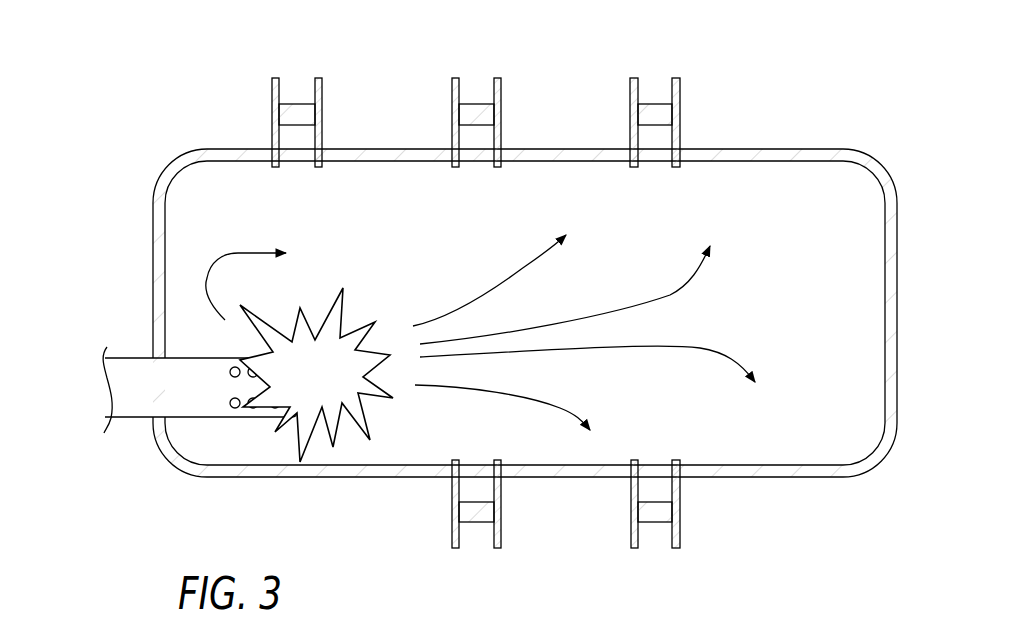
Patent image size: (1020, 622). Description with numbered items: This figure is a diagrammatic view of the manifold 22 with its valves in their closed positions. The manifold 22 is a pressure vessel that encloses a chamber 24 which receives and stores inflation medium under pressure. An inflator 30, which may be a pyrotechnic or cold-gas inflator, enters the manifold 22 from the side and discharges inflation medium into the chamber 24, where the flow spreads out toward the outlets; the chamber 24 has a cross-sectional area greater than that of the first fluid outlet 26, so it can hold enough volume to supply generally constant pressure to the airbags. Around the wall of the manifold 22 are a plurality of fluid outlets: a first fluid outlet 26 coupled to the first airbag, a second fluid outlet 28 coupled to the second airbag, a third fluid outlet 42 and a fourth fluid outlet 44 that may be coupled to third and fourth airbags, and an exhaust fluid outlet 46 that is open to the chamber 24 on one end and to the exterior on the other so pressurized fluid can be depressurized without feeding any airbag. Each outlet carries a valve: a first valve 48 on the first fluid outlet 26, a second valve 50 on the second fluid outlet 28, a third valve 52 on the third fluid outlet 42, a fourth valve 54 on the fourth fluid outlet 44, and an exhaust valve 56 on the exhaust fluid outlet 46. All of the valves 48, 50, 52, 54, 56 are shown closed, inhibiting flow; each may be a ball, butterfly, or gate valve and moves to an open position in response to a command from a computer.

The manifold 22 is at (797, 84).
The chamber 24 is at (411, 258).
The first fluid outlet 26 is at (630, 150).
The second fluid outlet 28 is at (272, 150).
The inflator 30 is at (137, 357).
The third fluid outlet 42 is at (680, 478).
The fourth fluid outlet 44 is at (501, 478).
The exhaust fluid outlet 46 is at (452, 150).
The first valve 48 is at (656, 103).
The second valve 50 is at (296, 103).
The third valve 52 is at (655, 524).
The fourth valve 54 is at (475, 524).
The exhaust valve 56 is at (476, 103).